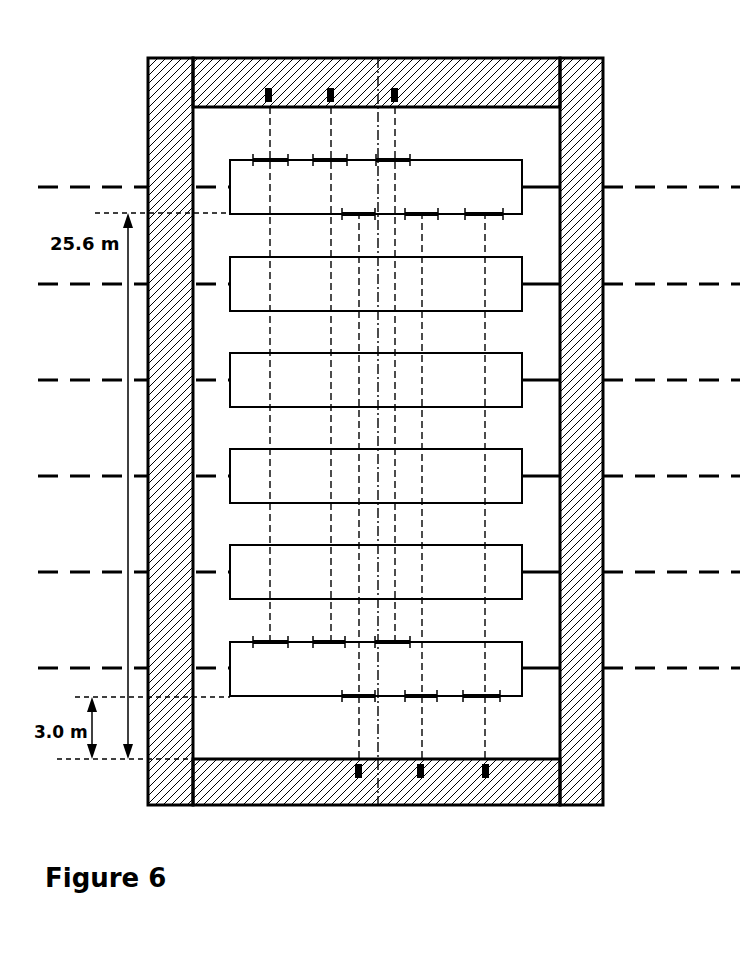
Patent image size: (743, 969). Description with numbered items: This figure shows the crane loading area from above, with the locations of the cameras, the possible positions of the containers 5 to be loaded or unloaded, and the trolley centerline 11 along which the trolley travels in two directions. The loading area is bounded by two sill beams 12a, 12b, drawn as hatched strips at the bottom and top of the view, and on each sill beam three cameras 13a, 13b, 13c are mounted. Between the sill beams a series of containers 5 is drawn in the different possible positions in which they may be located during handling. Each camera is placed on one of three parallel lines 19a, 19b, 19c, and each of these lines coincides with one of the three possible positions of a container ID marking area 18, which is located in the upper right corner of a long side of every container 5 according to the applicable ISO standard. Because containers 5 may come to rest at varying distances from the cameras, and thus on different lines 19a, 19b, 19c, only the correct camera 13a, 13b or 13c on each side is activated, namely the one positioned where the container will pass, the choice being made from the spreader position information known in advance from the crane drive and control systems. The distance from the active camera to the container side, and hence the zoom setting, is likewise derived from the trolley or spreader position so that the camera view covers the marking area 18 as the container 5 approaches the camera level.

The container 5 is at (364, 418).
The trolley centerline 11 is at (378, 72).
The sill beam 12a is at (238, 778).
The sill beam 12b is at (240, 68).
The camera 13a is at (358, 778).
The camera 13b is at (421, 778).
The camera 13c is at (486, 778).
The marking area 18 is at (493, 698).
The parallel line 19a is at (357, 752).
The parallel line 19b is at (420, 753).
The parallel line 19c is at (482, 702).